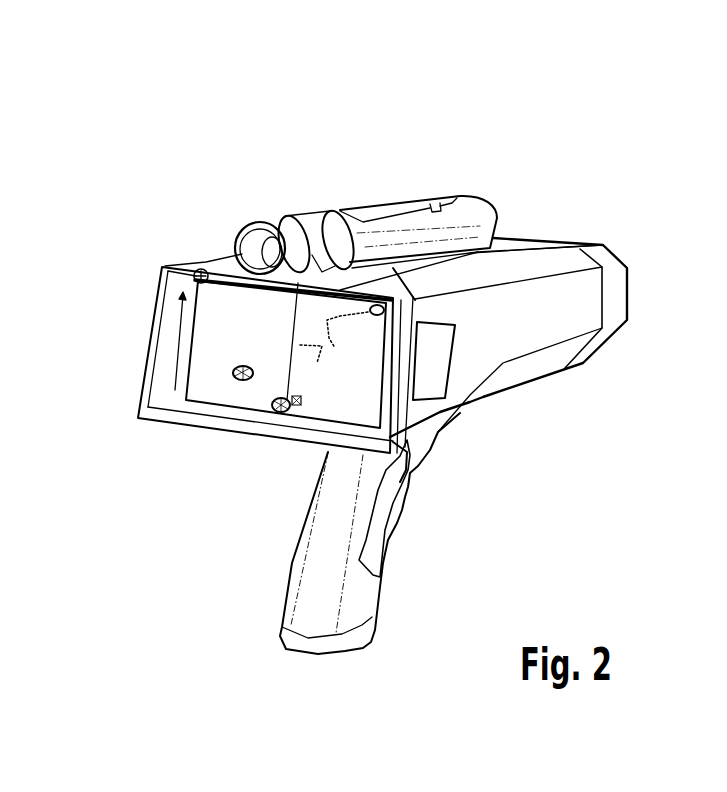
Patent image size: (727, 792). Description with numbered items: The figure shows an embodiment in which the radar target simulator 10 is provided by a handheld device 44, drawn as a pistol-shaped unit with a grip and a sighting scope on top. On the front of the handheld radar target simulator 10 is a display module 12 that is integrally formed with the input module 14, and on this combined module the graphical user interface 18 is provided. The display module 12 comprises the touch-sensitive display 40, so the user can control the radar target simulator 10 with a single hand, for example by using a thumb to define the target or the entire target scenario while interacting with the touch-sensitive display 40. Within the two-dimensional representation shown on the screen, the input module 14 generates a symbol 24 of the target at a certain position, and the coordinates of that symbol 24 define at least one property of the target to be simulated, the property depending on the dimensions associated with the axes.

The radar target simulator 10 is at (537, 205).
The display module 12 is at (182, 418).
The input module 14 is at (232, 438).
The graphical user interface 18 is at (192, 316).
The symbol 24 is at (240, 380).
The touch-sensitive display 40 is at (170, 350).
The handheld device 44 is at (350, 192).